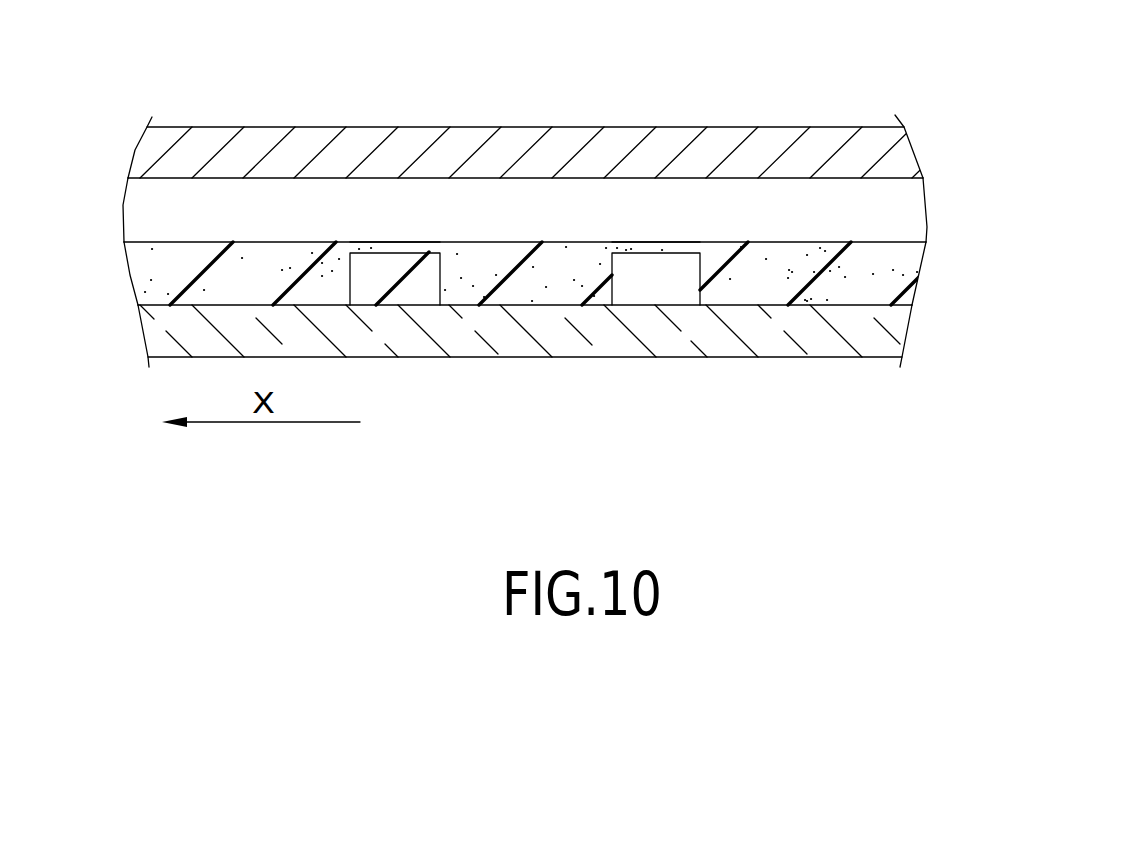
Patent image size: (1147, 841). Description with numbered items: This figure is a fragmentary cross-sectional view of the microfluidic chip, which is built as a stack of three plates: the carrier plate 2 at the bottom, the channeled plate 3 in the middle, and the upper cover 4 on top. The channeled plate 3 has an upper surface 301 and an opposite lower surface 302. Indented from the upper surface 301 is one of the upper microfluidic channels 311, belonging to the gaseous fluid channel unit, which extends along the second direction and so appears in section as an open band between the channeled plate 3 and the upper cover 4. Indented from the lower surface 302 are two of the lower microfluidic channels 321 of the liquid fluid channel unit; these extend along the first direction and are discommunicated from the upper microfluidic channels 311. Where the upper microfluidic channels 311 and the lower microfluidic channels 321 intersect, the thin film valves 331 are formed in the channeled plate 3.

The carrier plate 2 is at (900, 330).
The channeled plate 3 is at (908, 267).
The upper cover 4 is at (905, 147).
The upper surface 301 is at (887, 180).
The lower surface 302 is at (845, 307).
The upper microfluidic channels 311 is at (895, 220).
The lower microfluidic channels 321 is at (645, 278).
The thin film valves 331 is at (388, 243).